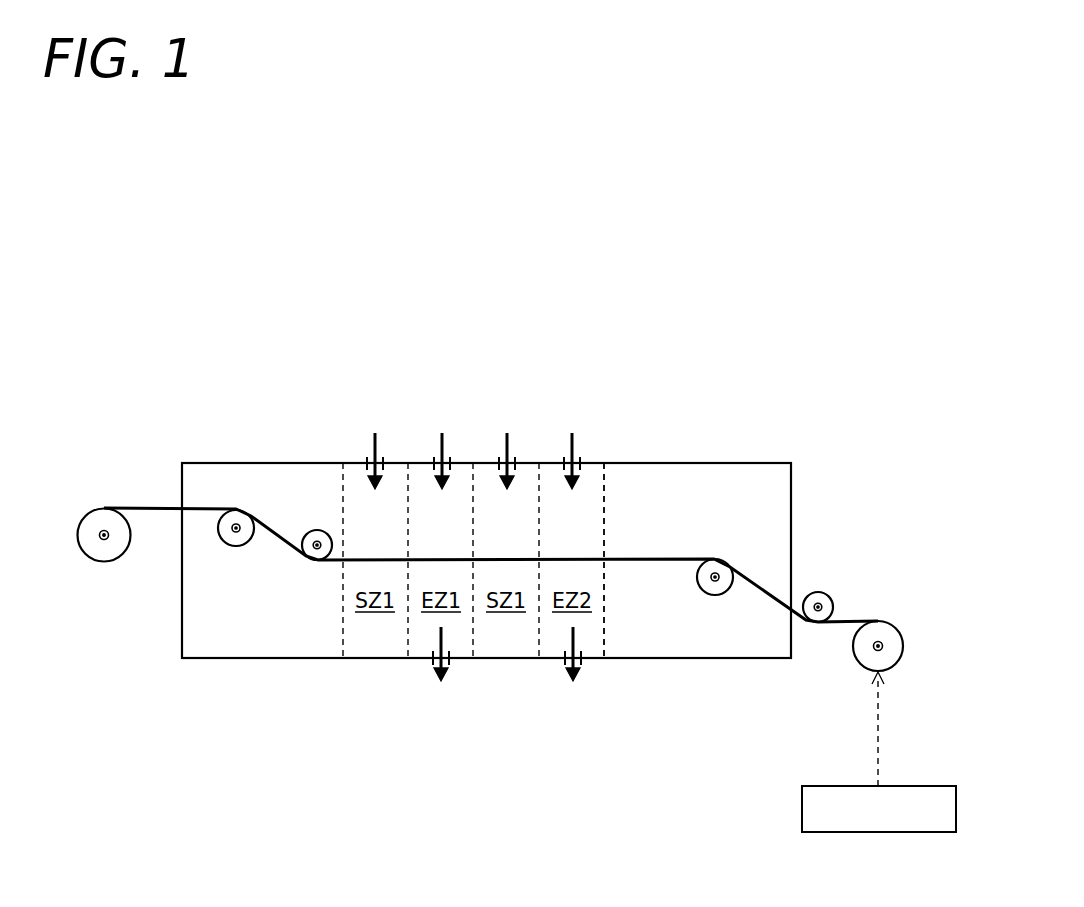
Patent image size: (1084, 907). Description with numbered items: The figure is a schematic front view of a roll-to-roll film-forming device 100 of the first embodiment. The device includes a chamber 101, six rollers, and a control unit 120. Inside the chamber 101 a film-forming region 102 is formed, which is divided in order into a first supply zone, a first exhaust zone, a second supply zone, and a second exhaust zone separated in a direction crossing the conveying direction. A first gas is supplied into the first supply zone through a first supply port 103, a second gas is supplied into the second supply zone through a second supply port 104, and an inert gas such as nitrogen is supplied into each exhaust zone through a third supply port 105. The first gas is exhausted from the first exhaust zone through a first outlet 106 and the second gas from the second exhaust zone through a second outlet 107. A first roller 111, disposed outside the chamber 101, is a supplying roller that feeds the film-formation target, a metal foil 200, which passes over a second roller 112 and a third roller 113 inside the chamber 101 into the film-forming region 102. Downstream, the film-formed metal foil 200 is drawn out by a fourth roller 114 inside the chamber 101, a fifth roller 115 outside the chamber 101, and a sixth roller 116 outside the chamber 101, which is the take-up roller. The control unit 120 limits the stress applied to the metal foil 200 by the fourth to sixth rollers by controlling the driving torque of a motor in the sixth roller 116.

The film-forming device 100 is at (638, 282).
The chamber 101 is at (198, 462).
The film-forming region 102 is at (607, 484).
The first supply port 103 is at (361, 456).
The second supply port 104 is at (491, 456).
The third supply port 105 is at (424, 456).
The first outlet 106 is at (467, 668).
The second outlet 107 is at (590, 666).
The first roller 111 is at (105, 508).
The second roller 112 is at (232, 540).
The third roller 113 is at (317, 530).
The fourth roller 114 is at (735, 570).
The fifth roller 115 is at (825, 597).
The sixth roller 116 is at (894, 671).
The control unit 120 is at (818, 832).
The metal foil 200 is at (677, 557).